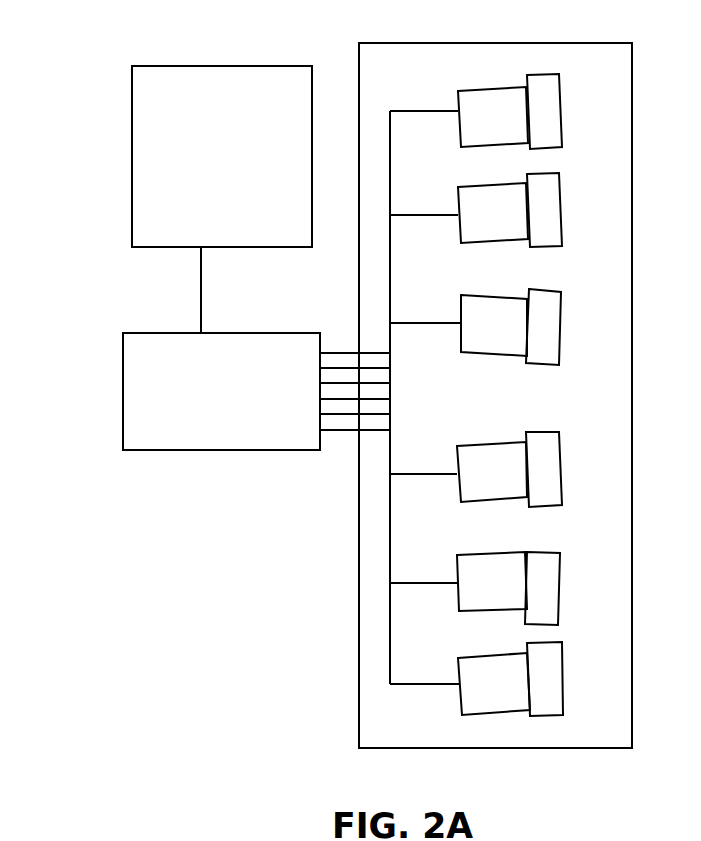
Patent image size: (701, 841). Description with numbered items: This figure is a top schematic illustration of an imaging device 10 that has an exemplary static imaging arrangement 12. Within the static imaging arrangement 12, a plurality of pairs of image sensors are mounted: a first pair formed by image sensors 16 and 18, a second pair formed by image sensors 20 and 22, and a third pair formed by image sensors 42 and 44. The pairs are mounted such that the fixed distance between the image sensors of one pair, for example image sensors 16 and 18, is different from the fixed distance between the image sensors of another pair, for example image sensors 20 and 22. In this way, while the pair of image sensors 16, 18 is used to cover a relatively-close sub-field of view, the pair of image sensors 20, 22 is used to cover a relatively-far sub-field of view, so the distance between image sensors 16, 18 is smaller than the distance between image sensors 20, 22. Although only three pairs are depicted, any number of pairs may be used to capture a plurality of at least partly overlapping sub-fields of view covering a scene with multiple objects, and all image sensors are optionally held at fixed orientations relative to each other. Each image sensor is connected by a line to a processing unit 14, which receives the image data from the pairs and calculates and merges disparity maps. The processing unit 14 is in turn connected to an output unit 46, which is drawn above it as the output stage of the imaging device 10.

The imaging device 10 is at (150, 710).
The static imaging arrangement 12 is at (378, 77).
The processing unit 14 is at (167, 332).
The image sensor 16 is at (473, 502).
The image sensor 18 is at (475, 353).
The image sensor 20 is at (563, 597).
The image sensor 22 is at (565, 215).
The image sensor 42 is at (563, 696).
The image sensor 44 is at (565, 100).
The output unit 46 is at (248, 60).